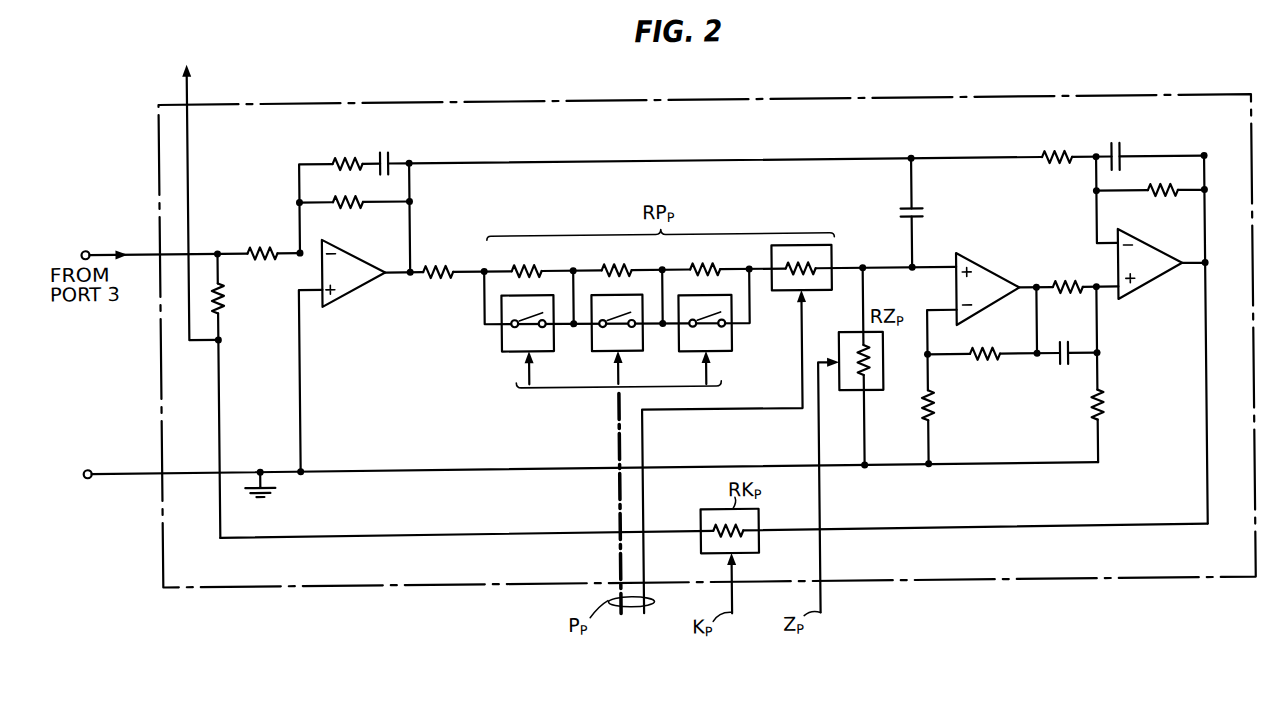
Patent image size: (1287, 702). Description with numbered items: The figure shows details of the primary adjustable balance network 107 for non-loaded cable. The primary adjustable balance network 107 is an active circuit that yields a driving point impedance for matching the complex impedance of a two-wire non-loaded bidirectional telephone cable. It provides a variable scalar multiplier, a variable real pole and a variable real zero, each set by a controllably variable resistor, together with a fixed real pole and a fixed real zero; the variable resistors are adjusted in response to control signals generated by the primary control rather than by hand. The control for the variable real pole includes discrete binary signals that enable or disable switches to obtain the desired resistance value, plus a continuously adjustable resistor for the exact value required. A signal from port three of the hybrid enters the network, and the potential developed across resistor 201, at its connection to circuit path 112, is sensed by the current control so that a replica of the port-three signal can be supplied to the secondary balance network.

The circuit path 112 is at (186, 81).
The primary adjustable balance network 107 is at (1055, 103).
The resistor 201 is at (220, 300).